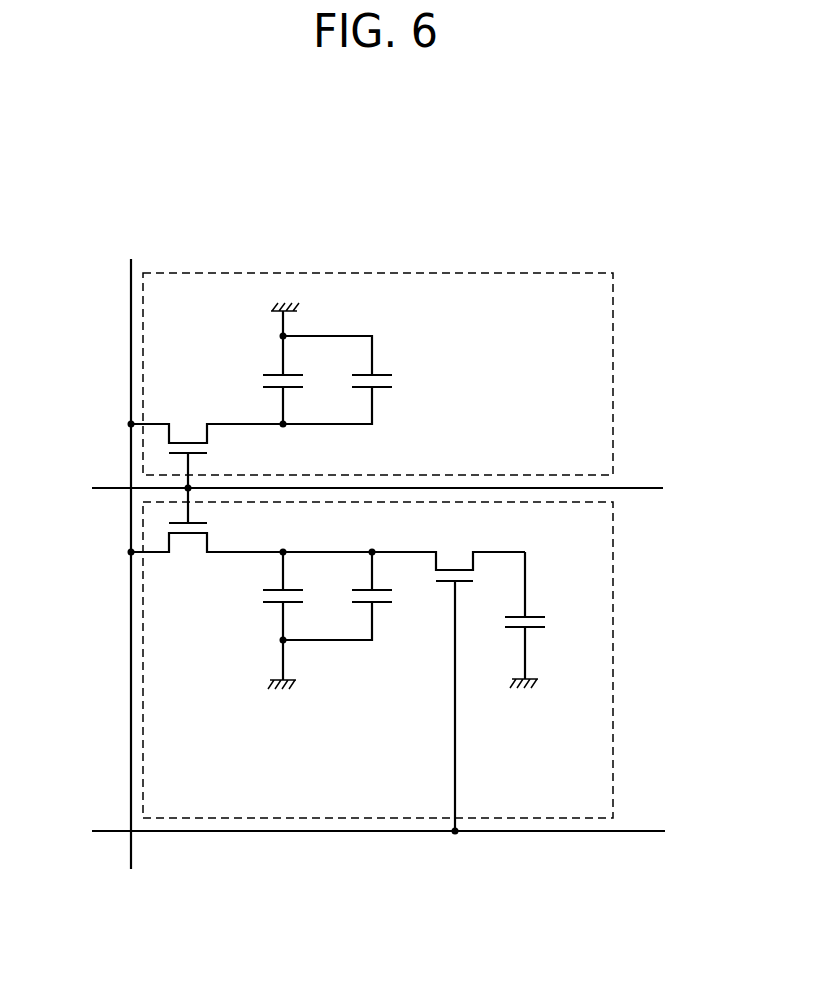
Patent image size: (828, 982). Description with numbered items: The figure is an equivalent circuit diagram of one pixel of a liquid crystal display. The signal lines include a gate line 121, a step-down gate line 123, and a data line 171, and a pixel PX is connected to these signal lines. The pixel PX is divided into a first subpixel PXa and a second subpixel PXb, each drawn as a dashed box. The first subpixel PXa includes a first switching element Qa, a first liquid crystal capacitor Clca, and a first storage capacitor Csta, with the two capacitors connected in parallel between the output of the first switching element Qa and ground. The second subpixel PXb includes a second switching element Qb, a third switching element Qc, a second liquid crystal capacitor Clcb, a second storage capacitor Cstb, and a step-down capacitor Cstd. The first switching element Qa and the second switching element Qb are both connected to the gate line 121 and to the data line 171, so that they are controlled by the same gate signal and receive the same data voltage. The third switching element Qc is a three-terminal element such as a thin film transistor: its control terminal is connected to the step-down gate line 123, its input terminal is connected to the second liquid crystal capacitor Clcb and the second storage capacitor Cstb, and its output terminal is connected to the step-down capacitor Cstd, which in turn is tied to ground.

The data line 171 is at (131, 308).
The gate line 121 is at (107, 488).
The step-down gate line 123 is at (637, 831).
The pixel PX is at (414, 493).
The first subpixel PXa is at (483, 273).
The second subpixel PXb is at (613, 558).
The first switching element Qa is at (206, 444).
The second switching element Qb is at (206, 531).
The third switching element Qc is at (448, 679).
The first liquid crystal capacitor Clca is at (260, 365).
The first storage capacitor Csta is at (361, 380).
The second liquid crystal capacitor Clcb is at (260, 619).
The second storage capacitor Cstb is at (361, 595).
The step-down capacitor Cstd is at (549, 620).